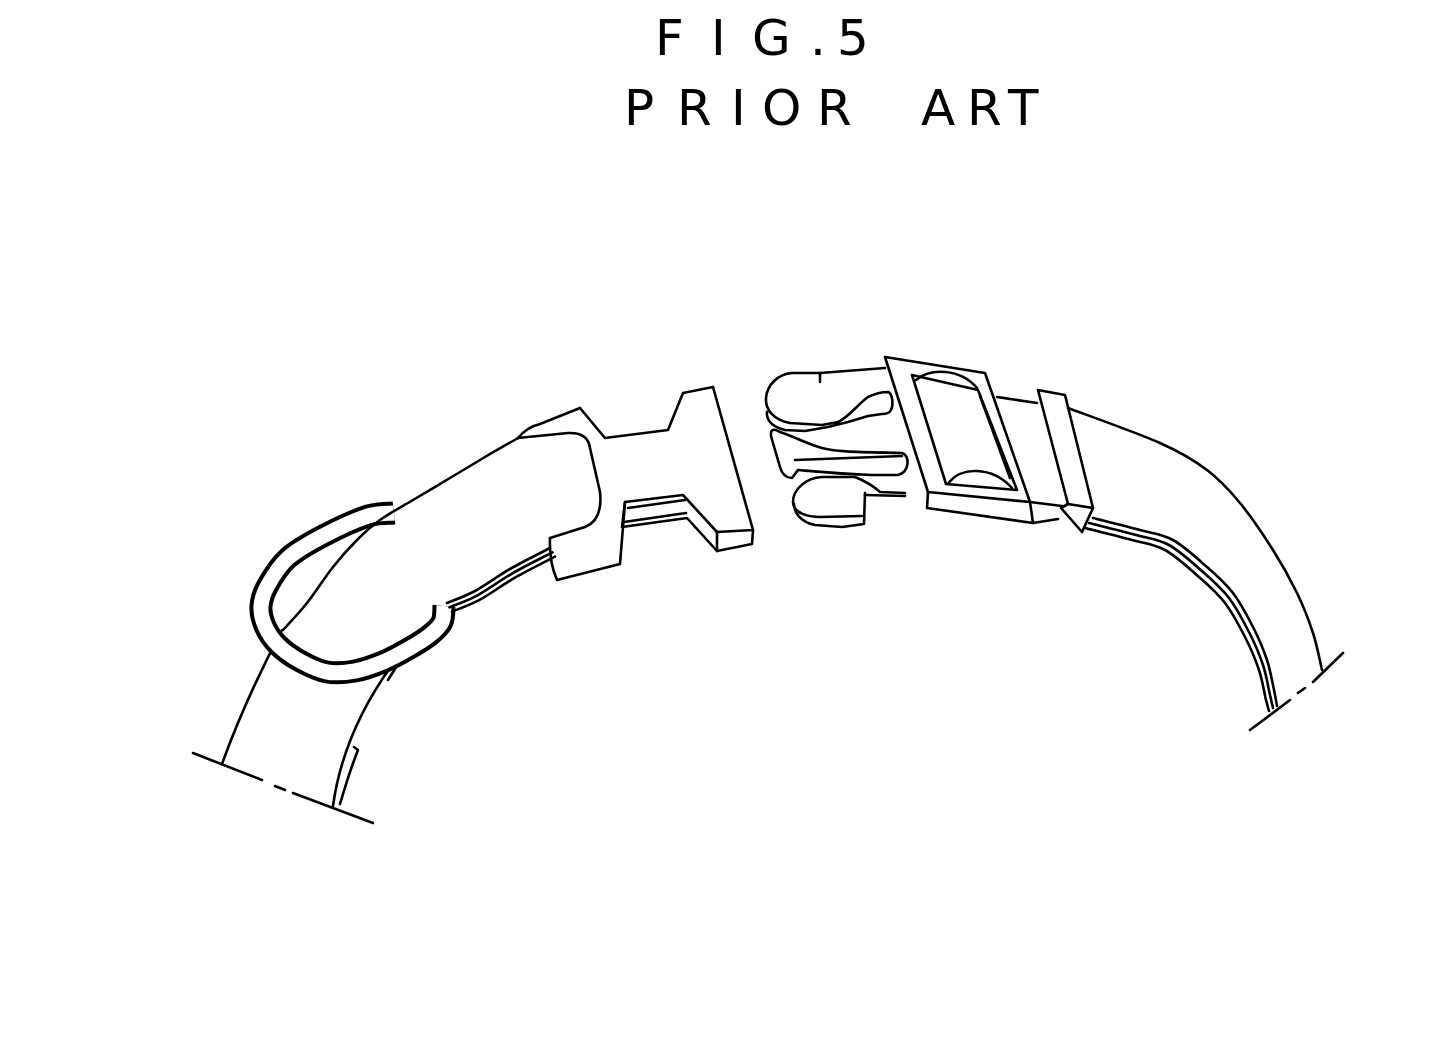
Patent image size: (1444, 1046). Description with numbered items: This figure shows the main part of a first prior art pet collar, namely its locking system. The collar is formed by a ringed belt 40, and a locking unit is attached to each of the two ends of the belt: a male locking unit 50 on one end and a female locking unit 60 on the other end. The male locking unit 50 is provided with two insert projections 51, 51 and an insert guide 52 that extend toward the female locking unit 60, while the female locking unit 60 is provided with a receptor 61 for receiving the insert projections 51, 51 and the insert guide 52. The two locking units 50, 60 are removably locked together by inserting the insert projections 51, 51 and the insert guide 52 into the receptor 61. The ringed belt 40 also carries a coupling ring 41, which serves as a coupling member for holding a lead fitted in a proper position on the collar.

The ringed belt 40 is at (1147, 480).
The coupling ring 41 is at (281, 558).
The male locking unit 50 is at (862, 360).
The insert projections 51 is at (802, 400).
The insert guide 52 is at (808, 443).
The female locking unit 60 is at (675, 514).
The receptor 61 is at (735, 458).